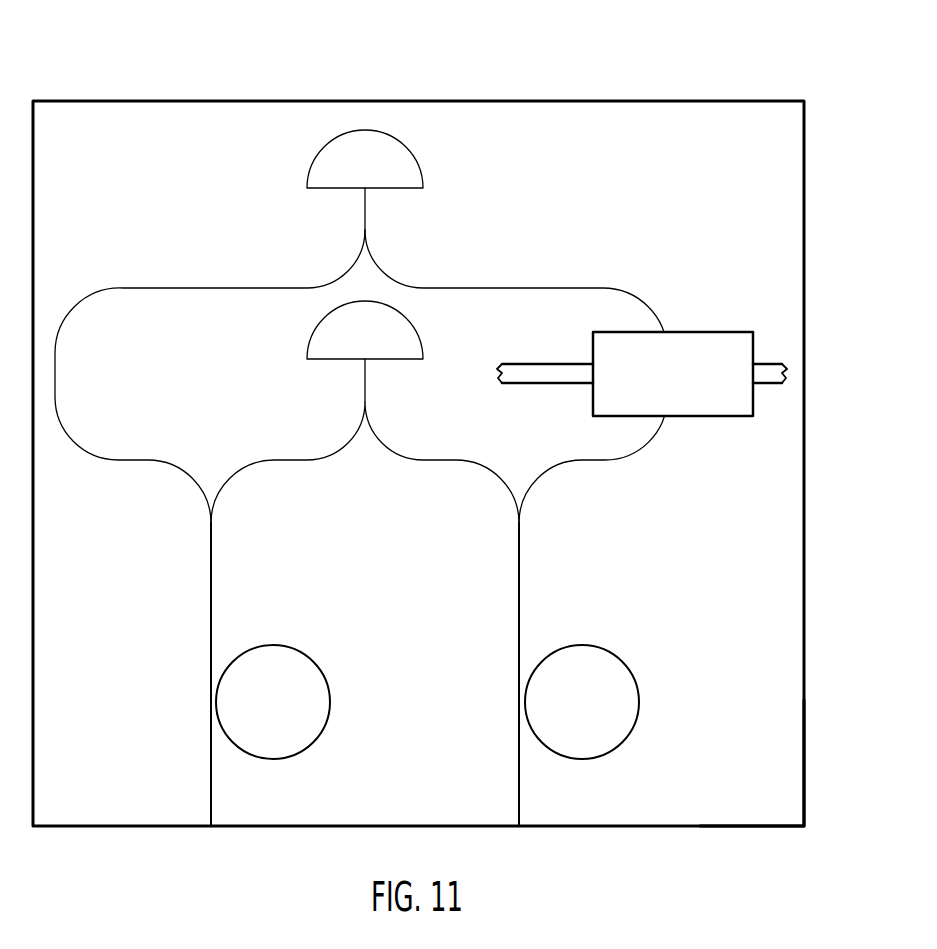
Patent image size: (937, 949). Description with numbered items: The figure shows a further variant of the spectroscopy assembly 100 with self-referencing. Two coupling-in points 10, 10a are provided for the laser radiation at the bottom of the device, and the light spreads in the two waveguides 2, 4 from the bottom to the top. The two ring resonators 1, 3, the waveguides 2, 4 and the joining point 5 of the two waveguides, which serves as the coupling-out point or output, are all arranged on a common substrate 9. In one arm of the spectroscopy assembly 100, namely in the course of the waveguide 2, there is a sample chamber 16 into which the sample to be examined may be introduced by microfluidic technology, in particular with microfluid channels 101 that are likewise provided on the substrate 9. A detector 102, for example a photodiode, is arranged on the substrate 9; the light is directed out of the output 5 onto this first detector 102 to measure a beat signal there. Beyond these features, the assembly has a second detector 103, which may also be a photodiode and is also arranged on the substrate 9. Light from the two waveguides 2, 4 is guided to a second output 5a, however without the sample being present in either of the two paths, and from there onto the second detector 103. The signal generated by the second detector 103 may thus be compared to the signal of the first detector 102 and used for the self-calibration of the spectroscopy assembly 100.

The spectroscopy assembly 100 is at (172, 85).
The substrate 9 is at (768, 805).
The joining point 5 is at (368, 218).
The detector 102 is at (402, 158).
The second output 5a is at (368, 385).
The second detector 103 is at (325, 336).
The sample chamber 16 is at (660, 386).
The microfluid channels 101 is at (537, 370).
The waveguide 4 is at (214, 795).
The waveguide 2 is at (522, 795).
The ring resonator 3 is at (266, 715).
The ring resonator 1 is at (575, 715).
The coupling-in point 10 is at (210, 832).
The coupling-in point 10a is at (518, 832).